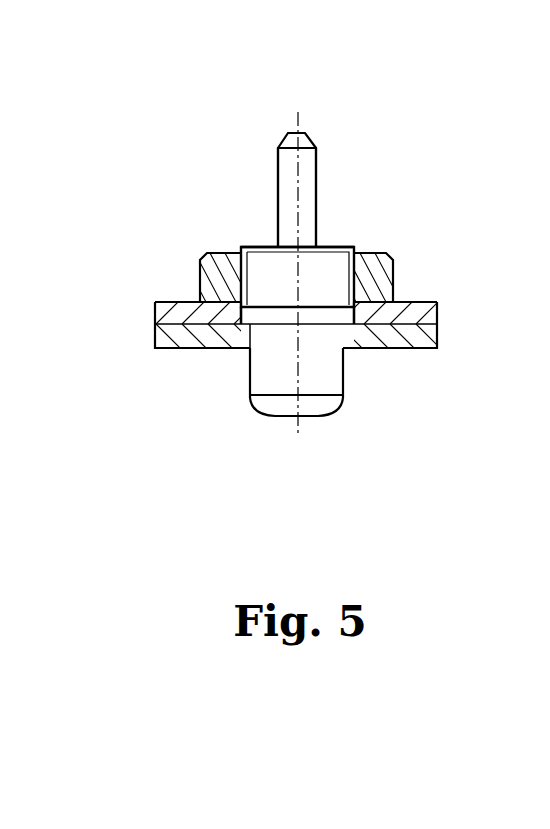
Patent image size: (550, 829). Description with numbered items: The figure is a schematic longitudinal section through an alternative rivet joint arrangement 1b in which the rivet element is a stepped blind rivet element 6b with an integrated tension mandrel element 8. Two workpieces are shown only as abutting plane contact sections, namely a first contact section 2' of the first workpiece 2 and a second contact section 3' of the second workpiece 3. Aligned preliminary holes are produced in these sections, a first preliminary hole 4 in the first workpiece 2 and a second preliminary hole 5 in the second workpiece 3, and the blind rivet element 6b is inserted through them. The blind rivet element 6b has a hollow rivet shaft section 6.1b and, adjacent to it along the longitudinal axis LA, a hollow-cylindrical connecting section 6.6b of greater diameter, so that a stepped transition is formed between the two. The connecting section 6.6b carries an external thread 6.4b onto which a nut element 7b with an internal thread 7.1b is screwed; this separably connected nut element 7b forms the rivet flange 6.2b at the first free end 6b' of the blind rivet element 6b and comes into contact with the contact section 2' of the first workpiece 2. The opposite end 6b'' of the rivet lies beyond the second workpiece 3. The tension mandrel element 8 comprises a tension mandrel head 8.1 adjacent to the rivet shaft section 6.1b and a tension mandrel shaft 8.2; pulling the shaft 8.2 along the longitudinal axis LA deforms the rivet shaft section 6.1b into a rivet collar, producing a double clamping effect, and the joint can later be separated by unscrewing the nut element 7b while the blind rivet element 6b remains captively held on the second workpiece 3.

The rivet joint arrangement 1b is at (405, 104).
The first workpiece 2 is at (300, 265).
The first contact section 2' is at (437, 254).
The second workpiece 3 is at (295, 390).
The second contact section 3' is at (407, 402).
The first preliminary hole 4 is at (240, 307).
The second preliminary hole 5 is at (250, 332).
The blind rivet element 6b is at (259, 293).
The first free end 6b' is at (325, 139).
The shank end of functional element 6b'' is at (333, 489).
The rivet shaft section 6.1b is at (238, 386).
The rivet flange 6.2b is at (188, 239).
The external thread 6.4b is at (352, 250).
The connecting section 6.6b is at (239, 234).
The nut element 7b is at (370, 277).
The internal thread 7.1b is at (366, 254).
The tension mandrel element 8 is at (256, 188).
The tension mandrel head 8.1 is at (290, 407).
The tension mandrel shaft 8.2 is at (282, 153).
The longitudinal axis LA is at (297, 305).